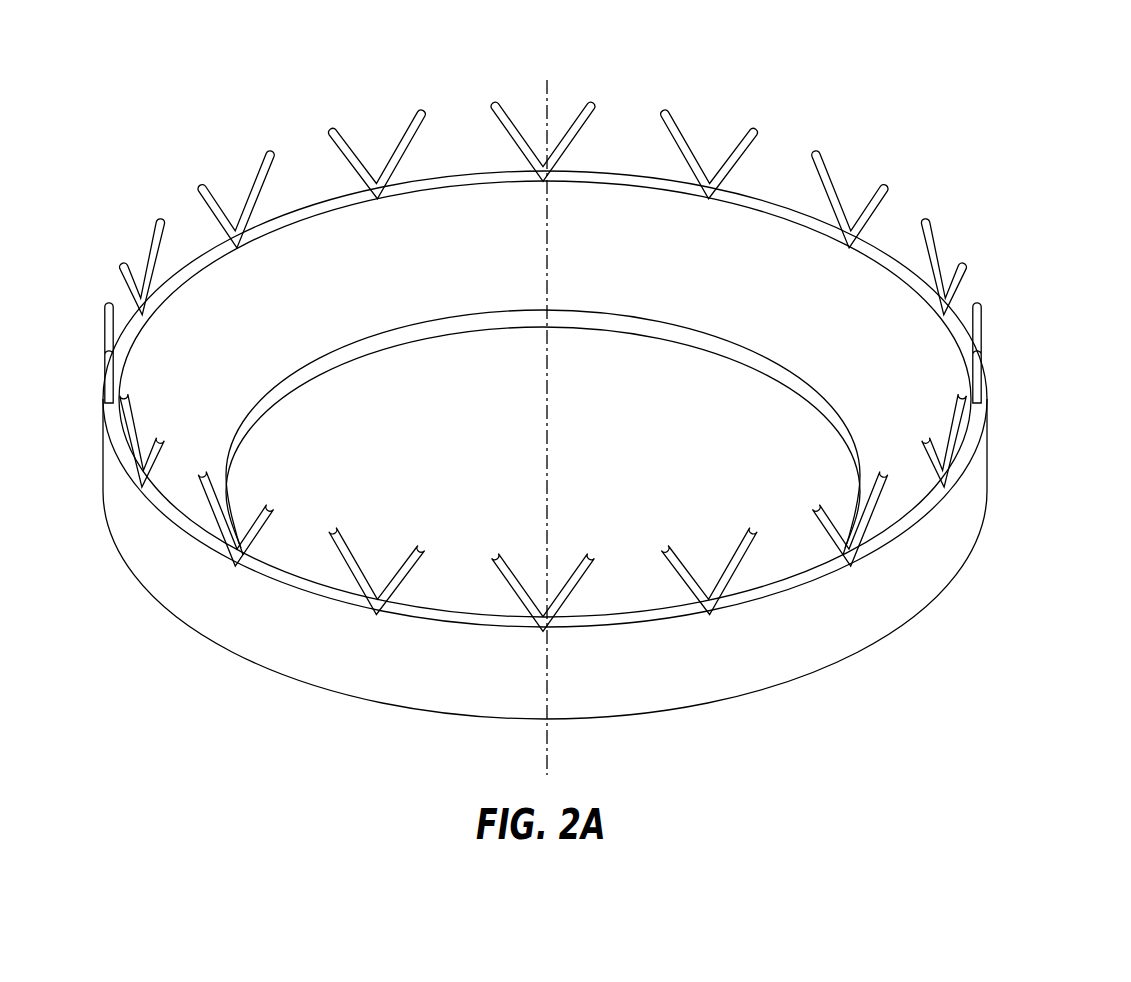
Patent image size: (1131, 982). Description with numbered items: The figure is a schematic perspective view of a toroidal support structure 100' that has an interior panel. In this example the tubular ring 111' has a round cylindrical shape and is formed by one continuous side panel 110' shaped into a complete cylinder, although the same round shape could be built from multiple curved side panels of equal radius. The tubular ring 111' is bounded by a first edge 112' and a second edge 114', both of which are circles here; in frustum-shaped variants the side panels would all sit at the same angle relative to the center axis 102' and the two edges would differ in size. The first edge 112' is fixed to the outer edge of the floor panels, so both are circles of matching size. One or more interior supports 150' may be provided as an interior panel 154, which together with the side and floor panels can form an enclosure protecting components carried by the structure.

The toroidal support structure 100' is at (597, 404).
The center axis 102' is at (604, 405).
The side panel 110' is at (597, 465).
The tubular ring 111' is at (597, 559).
The first edge 112' is at (1039, 493).
The second edge 114' is at (543, 332).
The interior support 150' is at (543, 432).
The interior panel 154 is at (312, 378).